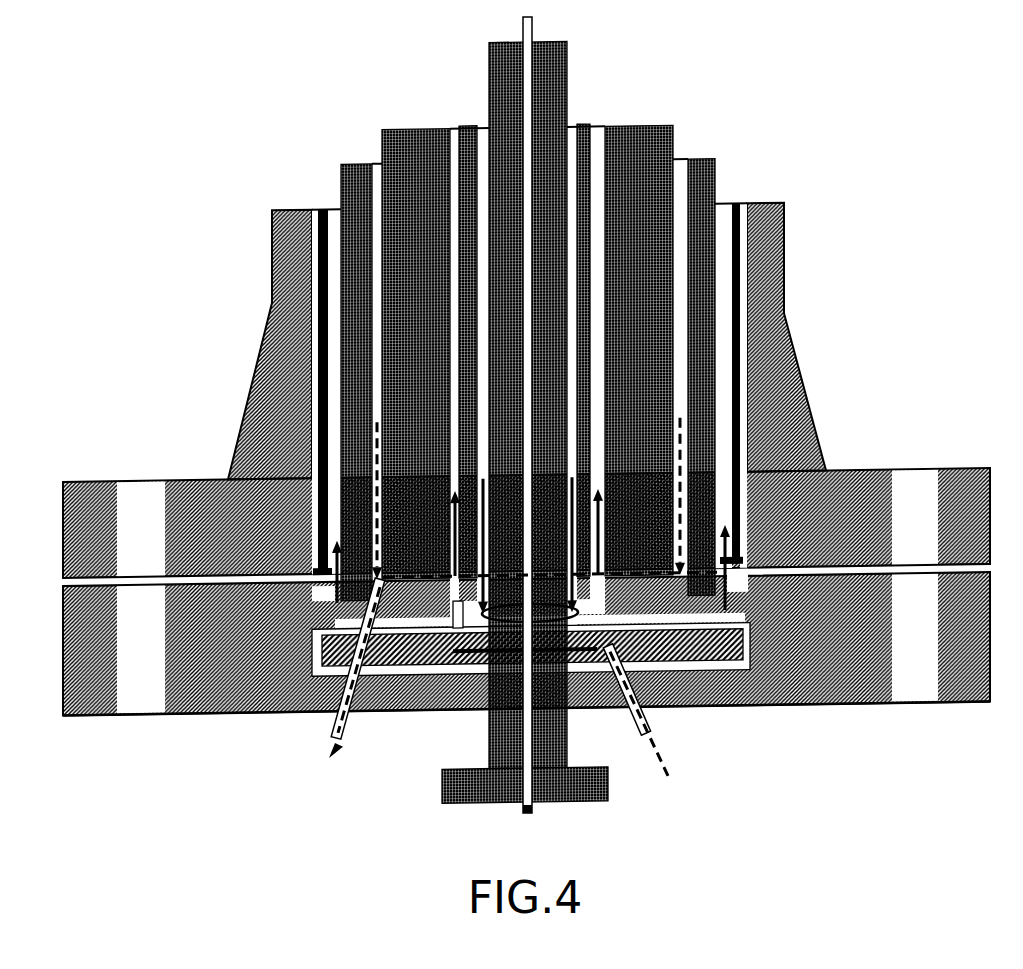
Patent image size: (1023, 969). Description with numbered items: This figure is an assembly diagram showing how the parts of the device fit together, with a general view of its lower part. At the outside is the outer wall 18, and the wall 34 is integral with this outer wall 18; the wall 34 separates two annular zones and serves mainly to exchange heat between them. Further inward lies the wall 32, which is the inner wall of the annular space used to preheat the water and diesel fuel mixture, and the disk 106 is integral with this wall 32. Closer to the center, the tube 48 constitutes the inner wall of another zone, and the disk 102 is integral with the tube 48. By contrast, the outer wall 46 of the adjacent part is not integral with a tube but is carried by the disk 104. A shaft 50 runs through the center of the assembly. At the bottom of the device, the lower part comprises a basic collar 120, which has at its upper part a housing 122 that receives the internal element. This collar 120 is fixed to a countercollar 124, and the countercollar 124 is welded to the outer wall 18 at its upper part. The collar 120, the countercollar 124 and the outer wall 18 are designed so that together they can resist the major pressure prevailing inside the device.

The outer wall 18 is at (783, 322).
The wall 32 is at (703, 188).
The wall 34 is at (735, 208).
The outer wall 46 is at (643, 157).
The tube 48 is at (582, 134).
The shaft 50 is at (527, 813).
The disk 102 is at (776, 676).
The disk 104 is at (698, 662).
The disk 106 is at (690, 536).
The basic collar 120 is at (863, 685).
The housing 122 is at (740, 663).
The countercollar 124 is at (863, 489).